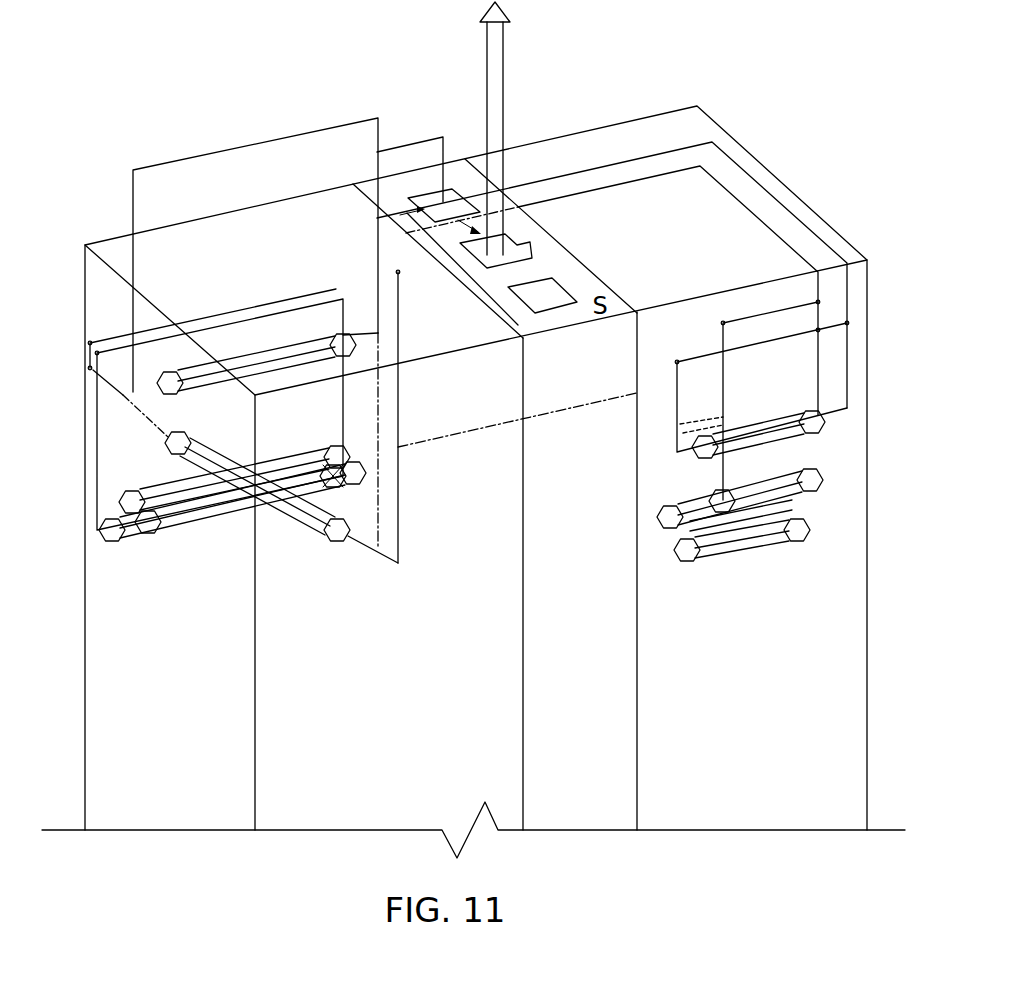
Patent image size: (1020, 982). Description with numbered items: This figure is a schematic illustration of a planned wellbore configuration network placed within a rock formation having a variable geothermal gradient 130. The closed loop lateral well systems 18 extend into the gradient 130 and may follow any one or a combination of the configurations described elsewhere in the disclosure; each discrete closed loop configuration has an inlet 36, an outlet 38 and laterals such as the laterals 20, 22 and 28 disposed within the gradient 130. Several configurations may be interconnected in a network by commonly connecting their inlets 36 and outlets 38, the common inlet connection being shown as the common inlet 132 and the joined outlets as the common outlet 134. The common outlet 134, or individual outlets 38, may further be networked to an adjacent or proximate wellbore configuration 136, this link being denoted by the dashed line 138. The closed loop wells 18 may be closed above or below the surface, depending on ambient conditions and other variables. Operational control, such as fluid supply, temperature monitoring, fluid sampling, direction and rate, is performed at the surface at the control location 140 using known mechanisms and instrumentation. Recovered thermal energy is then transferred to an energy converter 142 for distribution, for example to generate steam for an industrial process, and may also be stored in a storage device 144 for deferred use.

The lateral well system 18 is at (269, 338).
The lateral 20 is at (192, 370).
The lateral 22 is at (205, 372).
The lateral 28 is at (306, 367).
The inlet 36 is at (138, 249).
The outlet 38 is at (342, 297).
The geothermal gradient 130 is at (507, 695).
The common inlet connection 132 is at (115, 420).
The common outlet 134 is at (340, 398).
The adjacent wellbore configuration 136 is at (847, 180).
The network connection 138 is at (527, 417).
The operational control 140 is at (452, 200).
The energy converter 142 is at (508, 252).
The storage device 144 is at (547, 293).